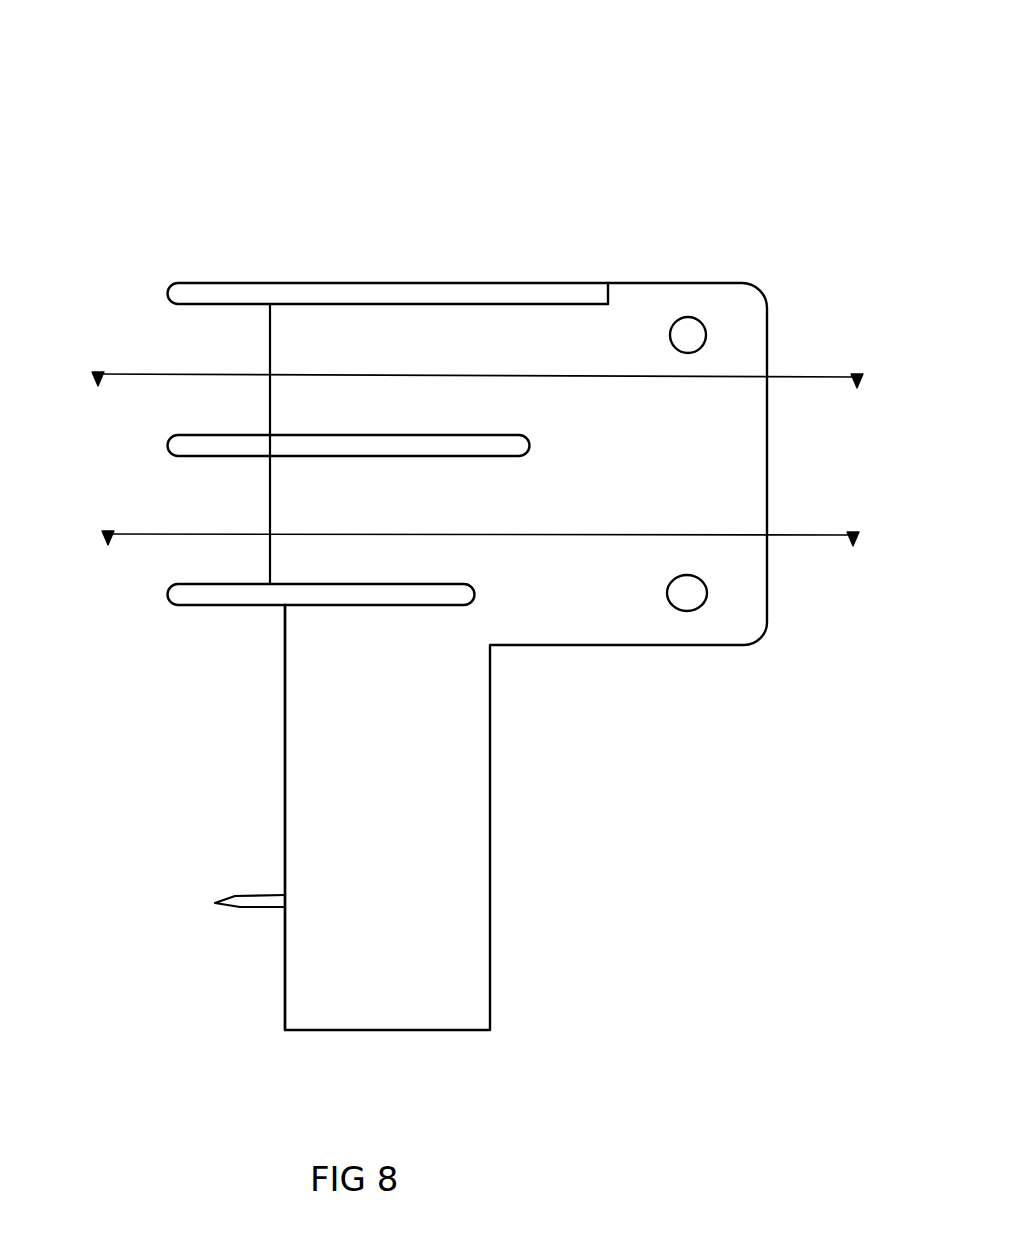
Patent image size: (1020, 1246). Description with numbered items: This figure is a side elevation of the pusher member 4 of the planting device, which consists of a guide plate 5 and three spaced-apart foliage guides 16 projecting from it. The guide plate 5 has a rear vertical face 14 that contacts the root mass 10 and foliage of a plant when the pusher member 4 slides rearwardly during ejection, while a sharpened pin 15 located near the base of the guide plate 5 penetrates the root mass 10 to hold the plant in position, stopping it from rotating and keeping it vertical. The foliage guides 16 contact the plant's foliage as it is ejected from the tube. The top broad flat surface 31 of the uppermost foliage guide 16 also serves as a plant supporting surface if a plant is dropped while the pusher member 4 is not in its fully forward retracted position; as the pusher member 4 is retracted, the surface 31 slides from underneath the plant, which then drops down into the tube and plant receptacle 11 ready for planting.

The pusher member 4 is at (730, 178).
The guide plate 5 is at (733, 488).
The root mass 10 is at (476, 382).
The plant receptacle 11 is at (483, 540).
The rear vertical face 14 is at (285, 793).
The sharpened pin 15 is at (237, 908).
The foliage guides 16 is at (403, 300).
The top broad flat surface 31 is at (350, 283).